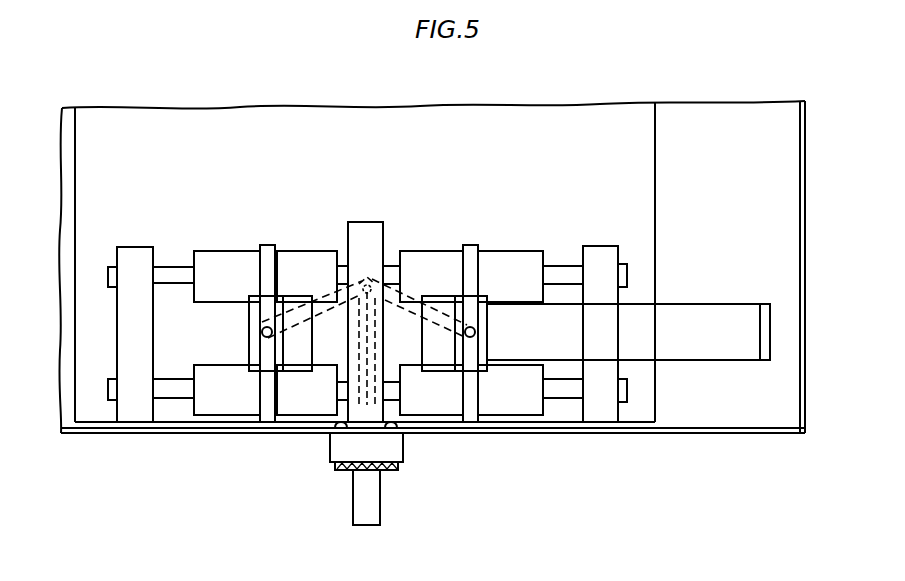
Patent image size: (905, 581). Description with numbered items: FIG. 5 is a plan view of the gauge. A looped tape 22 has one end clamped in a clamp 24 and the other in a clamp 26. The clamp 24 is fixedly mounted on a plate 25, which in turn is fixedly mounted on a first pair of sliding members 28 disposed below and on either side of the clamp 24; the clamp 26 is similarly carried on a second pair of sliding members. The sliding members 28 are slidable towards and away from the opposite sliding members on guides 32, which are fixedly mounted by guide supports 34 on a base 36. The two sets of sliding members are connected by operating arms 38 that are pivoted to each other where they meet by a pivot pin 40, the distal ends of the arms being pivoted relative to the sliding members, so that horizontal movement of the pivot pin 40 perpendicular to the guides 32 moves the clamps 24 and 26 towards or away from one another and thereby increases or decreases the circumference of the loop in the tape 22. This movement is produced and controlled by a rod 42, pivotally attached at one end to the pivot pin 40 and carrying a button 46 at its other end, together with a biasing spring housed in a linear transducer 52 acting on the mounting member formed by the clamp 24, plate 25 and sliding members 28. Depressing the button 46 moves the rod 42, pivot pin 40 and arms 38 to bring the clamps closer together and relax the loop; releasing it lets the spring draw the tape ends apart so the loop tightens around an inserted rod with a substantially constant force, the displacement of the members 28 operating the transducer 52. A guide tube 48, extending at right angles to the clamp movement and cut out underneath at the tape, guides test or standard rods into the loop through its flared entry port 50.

The looped tape 22 is at (322, 330).
The clamp 24 is at (432, 299).
The plate 25 is at (473, 270).
The clamp 26 is at (289, 301).
The sliding members 28 is at (505, 385).
The guides 32 is at (187, 275).
The guide supports 34 is at (133, 313).
The base 36 is at (288, 175).
The operating arms 38 is at (293, 333).
The pivot pin 40 is at (370, 327).
The rod 42 is at (395, 392).
The button 46 is at (372, 500).
The guide tube 48 is at (363, 232).
The flared entry port 50 is at (395, 450).
The linear transducer 52 is at (705, 349).